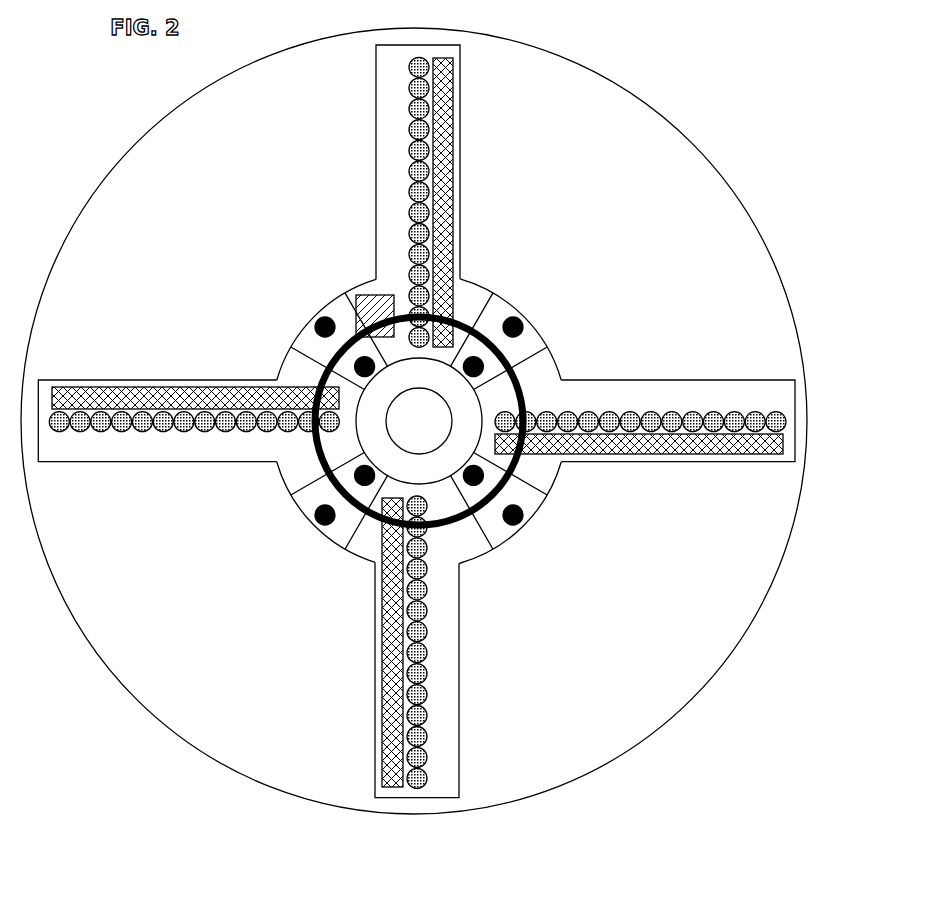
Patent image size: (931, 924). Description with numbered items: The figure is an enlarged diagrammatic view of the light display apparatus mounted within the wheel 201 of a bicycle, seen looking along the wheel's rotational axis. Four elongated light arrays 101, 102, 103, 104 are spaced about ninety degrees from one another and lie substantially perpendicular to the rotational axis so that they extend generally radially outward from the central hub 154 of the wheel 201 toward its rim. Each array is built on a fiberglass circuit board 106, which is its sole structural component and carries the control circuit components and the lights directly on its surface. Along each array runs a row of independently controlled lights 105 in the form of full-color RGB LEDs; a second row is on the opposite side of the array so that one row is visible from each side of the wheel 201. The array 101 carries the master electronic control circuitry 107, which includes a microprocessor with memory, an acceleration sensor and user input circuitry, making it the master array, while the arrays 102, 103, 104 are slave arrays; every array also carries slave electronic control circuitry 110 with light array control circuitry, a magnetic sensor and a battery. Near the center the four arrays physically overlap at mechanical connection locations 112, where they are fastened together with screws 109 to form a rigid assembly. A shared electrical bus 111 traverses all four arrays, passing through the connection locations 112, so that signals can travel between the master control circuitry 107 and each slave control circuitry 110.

The wheel 201 is at (636, 750).
The master light array 101 is at (416, 421).
The slave light array 102 is at (419, 486).
The slave light array 103 is at (471, 717).
The slave light array 104 is at (105, 473).
The lights 105 is at (632, 400).
The circuit board 106 is at (460, 86).
The master electronic control circuitry 107 is at (355, 315).
The screws 109 is at (305, 328).
The slave electronic control circuitry 110 is at (678, 462).
The shared electrical bus 111 is at (458, 520).
The mechanical connection locations 112 is at (313, 325).
The central hub 154 is at (403, 455).